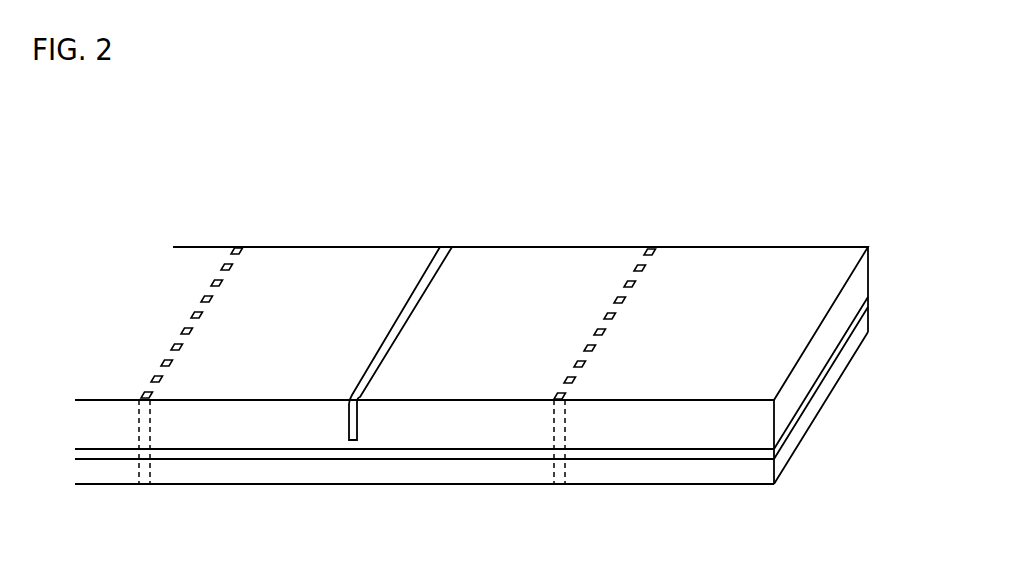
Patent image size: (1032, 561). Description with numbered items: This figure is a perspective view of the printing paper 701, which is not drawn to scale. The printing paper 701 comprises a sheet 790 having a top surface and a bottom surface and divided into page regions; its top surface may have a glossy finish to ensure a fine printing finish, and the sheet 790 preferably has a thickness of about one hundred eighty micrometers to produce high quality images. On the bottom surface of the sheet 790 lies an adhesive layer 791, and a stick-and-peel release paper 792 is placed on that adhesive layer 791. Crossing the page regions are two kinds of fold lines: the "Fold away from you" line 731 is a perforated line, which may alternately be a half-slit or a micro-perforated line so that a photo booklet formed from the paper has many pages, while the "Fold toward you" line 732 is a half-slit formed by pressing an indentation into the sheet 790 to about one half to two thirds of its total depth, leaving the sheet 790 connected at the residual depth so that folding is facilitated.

The printing paper 701 is at (767, 207).
The "Fold away from you" line 731 is at (237, 248).
The "Fold toward you" line 732 is at (434, 273).
The sheet 790 is at (765, 423).
The adhesive layer 791 is at (765, 459).
The release paper 792 is at (765, 480).